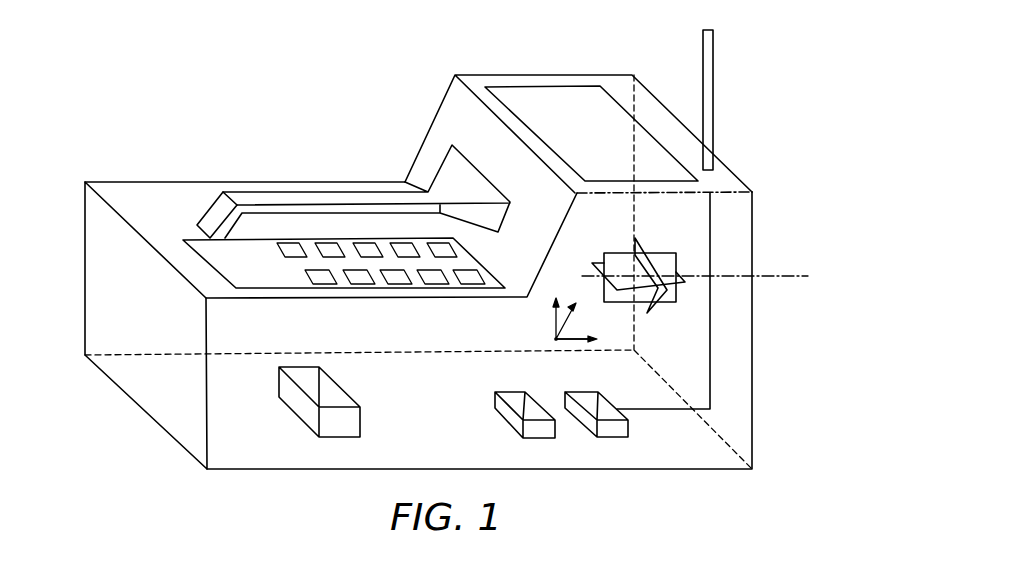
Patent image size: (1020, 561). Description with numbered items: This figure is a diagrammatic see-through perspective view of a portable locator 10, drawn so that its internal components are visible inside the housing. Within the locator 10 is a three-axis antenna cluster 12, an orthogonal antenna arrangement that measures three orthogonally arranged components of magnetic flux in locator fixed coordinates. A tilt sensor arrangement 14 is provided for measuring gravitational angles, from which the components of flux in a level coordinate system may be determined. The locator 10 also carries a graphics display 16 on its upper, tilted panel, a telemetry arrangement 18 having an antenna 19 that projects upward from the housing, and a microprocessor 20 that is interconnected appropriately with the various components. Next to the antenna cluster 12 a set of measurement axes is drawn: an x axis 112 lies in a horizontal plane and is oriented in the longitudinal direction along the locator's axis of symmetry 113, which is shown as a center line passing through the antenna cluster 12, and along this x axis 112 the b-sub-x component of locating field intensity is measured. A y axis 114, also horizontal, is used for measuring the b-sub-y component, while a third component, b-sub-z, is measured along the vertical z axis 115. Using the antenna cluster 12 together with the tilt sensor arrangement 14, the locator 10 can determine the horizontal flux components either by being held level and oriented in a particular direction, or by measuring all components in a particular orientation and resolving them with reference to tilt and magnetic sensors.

The portable locator 10 is at (308, 138).
The three-axis antenna cluster 12 is at (677, 303).
The tilt sensor arrangement 14 is at (510, 427).
The graphics display 16 is at (538, 87).
The telemetry arrangement 18 is at (630, 430).
The antenna 19 is at (713, 118).
The microprocessor 20 is at (343, 391).
The x axis 112 is at (570, 341).
The axis of symmetry 113 is at (787, 273).
The y axis 114 is at (553, 332).
The z axis 115 is at (556, 319).